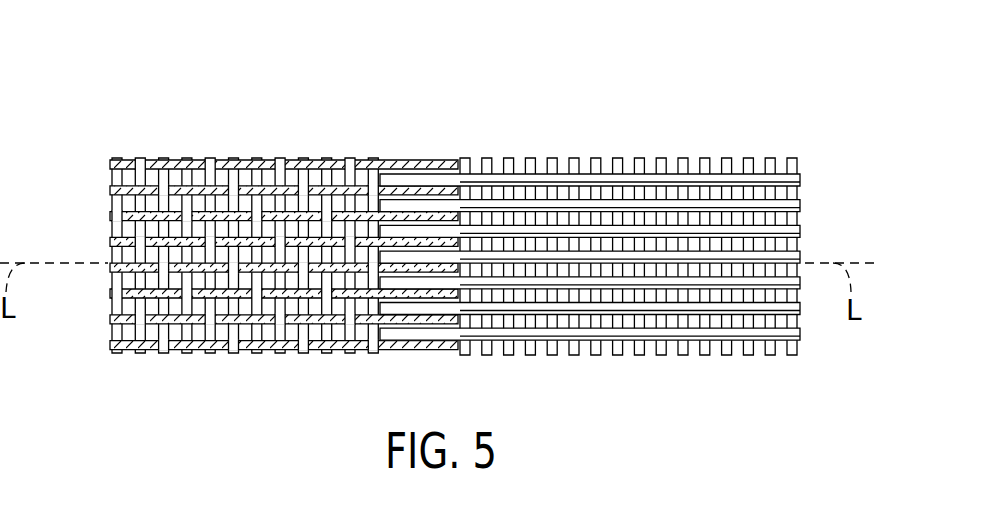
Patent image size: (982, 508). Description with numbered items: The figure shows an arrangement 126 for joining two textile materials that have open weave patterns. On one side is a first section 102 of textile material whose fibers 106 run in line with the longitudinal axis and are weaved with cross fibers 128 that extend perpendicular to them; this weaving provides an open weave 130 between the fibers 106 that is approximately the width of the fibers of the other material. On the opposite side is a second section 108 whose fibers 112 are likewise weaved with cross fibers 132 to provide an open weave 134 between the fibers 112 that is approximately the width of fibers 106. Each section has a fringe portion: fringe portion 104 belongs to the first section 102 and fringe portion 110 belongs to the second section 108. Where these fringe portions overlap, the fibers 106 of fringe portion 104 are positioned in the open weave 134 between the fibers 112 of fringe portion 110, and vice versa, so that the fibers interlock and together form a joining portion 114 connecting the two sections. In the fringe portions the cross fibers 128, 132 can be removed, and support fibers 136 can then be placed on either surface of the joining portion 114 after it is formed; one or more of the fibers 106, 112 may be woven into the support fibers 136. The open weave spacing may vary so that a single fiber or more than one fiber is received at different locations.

The first section 102 is at (255, 229).
The fringe portion 104 is at (409, 194).
The fibers 106 is at (112, 192).
The second section 108 is at (683, 158).
The fringe portion 110 is at (659, 248).
The fibers 112 is at (800, 180).
The joining portion 114 is at (423, 157).
The arrangement 126 is at (454, 211).
The cross fibers 128 is at (187, 353).
The open weave 130 is at (320, 160).
The cross fibers 132 is at (747, 353).
The open weave 134 is at (522, 193).
The support fibers 136 is at (460, 352).